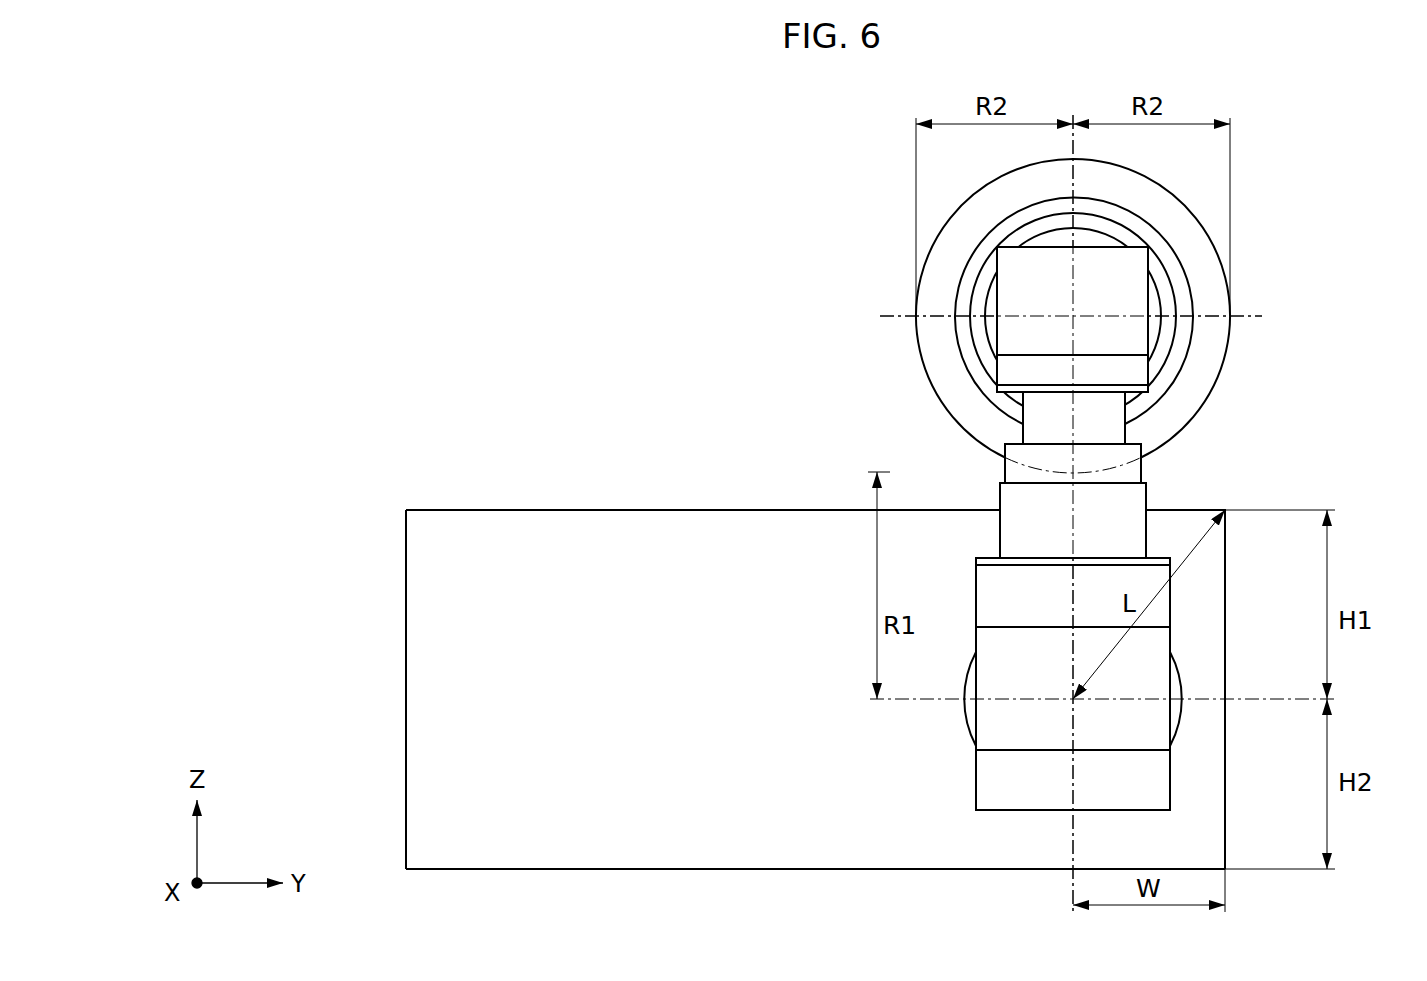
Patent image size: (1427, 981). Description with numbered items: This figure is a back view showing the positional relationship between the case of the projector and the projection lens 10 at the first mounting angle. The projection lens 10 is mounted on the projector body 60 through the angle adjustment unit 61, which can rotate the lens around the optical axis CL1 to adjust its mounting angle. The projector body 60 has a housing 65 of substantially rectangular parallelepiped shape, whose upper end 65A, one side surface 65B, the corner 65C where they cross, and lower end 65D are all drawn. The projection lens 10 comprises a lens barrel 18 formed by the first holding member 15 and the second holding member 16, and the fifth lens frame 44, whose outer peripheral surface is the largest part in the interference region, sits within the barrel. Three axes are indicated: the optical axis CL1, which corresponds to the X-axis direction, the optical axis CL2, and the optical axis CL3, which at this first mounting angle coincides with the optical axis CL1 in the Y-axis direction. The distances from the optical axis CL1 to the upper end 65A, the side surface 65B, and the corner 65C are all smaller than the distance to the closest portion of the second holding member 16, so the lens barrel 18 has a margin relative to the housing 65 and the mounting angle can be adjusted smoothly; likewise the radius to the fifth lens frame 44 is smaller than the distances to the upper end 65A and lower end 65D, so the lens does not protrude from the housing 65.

The projection lens 10 is at (1097, 326).
The second holding member 16 is at (940, 262).
The fifth lens frame 44 is at (1198, 242).
The lens barrel 18 is at (1182, 409).
The first holding member 15 is at (988, 784).
The projector body 60 is at (852, 671).
The angle adjustment unit 61 is at (966, 708).
The housing 65 is at (852, 674).
The upper end 65A is at (838, 508).
The side surface 65B is at (1226, 580).
The corner 65C is at (1228, 508).
The lower end 65D is at (838, 870).
The optical axis CL1 is at (1073, 699).
The optical axis CL2 is at (1150, 448).
The optical axis CL3 is at (1073, 316).